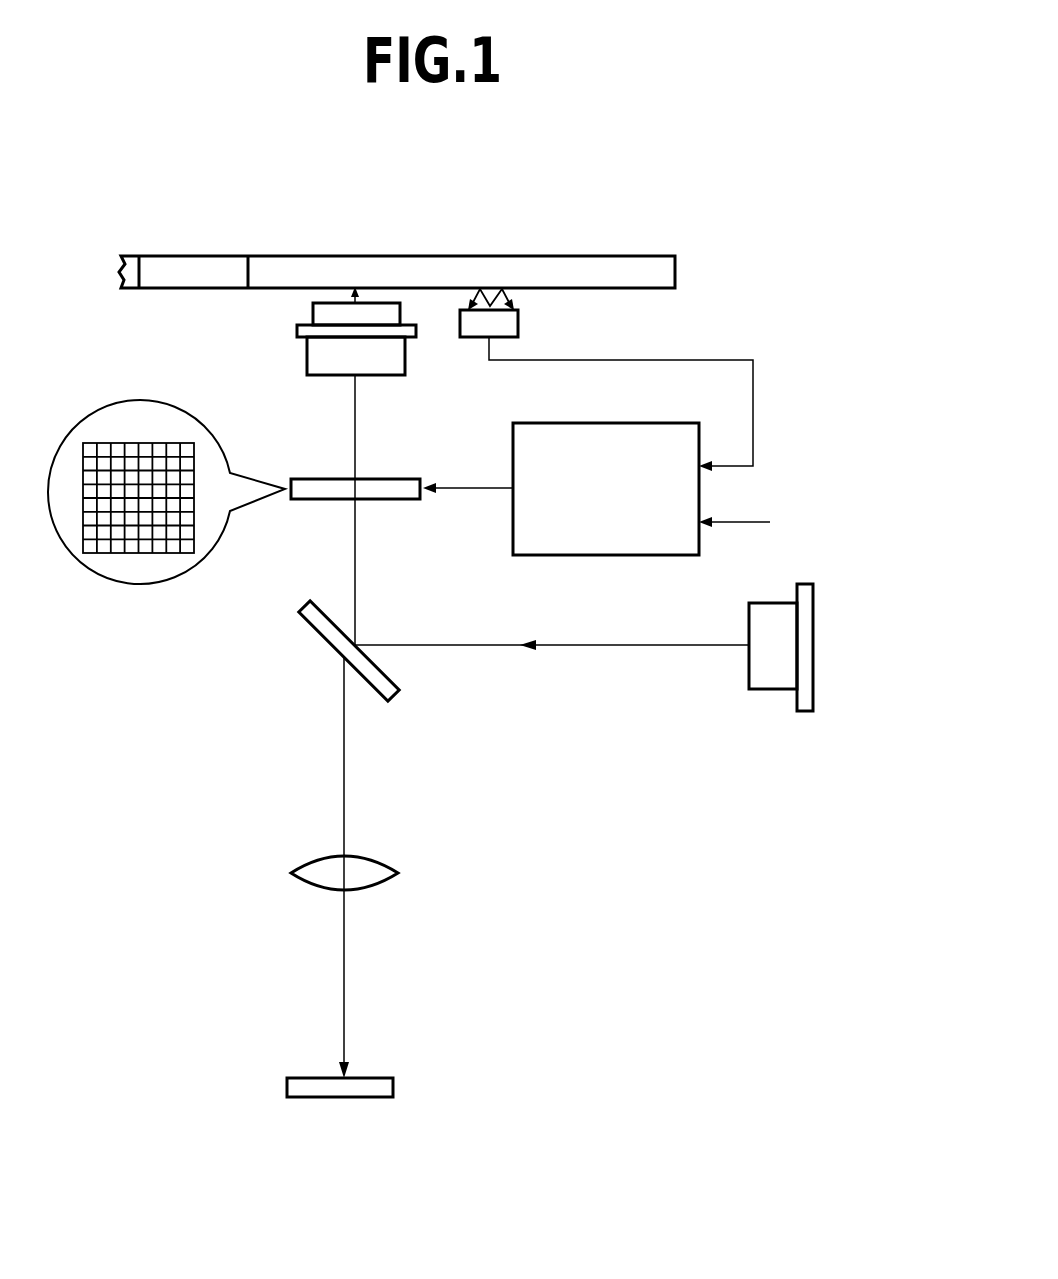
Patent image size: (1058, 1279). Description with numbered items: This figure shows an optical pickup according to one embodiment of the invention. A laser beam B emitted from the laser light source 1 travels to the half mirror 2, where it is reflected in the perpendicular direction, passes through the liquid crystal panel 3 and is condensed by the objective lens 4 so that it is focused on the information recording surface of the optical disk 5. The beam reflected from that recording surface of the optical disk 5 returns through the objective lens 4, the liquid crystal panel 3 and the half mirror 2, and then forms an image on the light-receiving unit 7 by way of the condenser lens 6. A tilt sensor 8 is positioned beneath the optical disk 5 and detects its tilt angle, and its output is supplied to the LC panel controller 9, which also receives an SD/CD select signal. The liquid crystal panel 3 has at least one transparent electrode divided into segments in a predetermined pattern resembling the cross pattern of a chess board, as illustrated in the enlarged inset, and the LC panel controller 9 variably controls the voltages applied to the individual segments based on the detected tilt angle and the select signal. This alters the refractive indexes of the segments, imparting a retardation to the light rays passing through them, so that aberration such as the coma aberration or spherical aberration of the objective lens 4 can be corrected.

The laser light source 1 is at (773, 683).
The half mirror 2 is at (312, 625).
The liquid crystal panel 3 is at (396, 485).
The objective lens 4 is at (313, 350).
The optical disk 5 is at (596, 258).
The condenser lens 6 is at (385, 862).
The light-receiving unit 7 is at (393, 1087).
The tilt sensor 8 is at (508, 322).
The LC panel controller 9 is at (670, 430).
The laser beam B is at (648, 640).